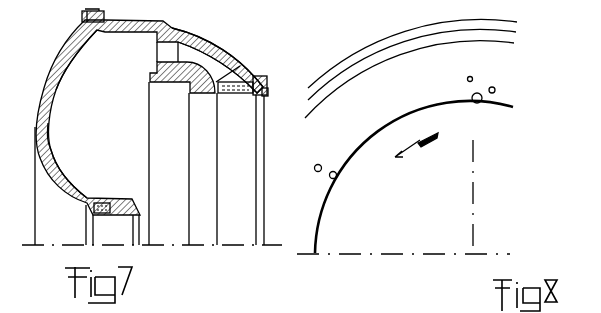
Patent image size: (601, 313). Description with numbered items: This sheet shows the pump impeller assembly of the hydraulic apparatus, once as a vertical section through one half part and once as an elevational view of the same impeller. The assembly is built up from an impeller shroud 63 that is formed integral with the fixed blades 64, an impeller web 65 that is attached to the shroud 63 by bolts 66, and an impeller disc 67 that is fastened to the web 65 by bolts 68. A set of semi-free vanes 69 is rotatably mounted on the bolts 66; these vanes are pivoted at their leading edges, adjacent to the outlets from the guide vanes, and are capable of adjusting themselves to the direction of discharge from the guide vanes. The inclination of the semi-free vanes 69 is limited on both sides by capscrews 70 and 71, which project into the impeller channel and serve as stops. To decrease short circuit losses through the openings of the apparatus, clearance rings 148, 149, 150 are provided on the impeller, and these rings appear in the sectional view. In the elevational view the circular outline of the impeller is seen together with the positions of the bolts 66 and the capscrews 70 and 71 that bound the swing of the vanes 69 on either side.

In FIG. 7, the impeller shroud 63 is at (186, 79).
In FIG. 7, the fixed blades 64 is at (195, 73).
In FIG. 7, the impeller web 65 is at (190, 36).
In FIG. 7, the bolts 66 is at (267, 84).
In FIG. 8, the bolts 66 is at (480, 103).
In FIG. 7, the impeller disc 67 is at (36, 118).
In FIG. 7, the bolts 68 is at (83, 15).
In FIG. 7, the semi-free vanes 69 is at (250, 95).
In FIG. 8, the capscrew 70 is at (467, 79).
In FIG. 8, the capscrew 71 is at (496, 91).
In FIG. 7, the clearance ring 148 is at (50, 125).
In FIG. 7, the clearance ring 149 is at (70, 53).
In FIG. 7, the clearance ring 150 is at (157, 70).